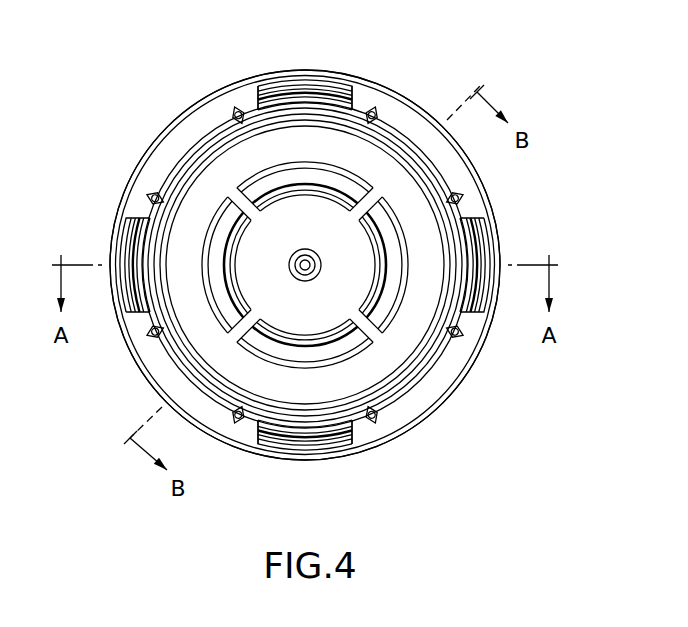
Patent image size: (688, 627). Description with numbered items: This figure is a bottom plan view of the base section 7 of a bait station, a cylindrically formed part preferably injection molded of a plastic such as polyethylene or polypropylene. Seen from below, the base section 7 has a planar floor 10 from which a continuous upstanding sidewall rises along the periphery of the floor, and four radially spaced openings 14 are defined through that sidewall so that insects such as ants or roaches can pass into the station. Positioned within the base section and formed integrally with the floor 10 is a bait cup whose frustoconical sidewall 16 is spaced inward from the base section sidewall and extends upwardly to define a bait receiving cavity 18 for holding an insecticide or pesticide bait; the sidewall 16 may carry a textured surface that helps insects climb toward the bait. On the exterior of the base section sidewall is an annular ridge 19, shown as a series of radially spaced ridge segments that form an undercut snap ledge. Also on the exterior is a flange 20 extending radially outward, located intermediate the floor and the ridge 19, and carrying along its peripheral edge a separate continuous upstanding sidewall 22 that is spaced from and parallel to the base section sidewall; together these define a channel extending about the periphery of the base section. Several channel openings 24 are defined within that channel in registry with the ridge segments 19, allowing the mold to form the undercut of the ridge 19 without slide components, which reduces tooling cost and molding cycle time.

The base section 7 is at (430, 90).
The planar floor 10 is at (271, 157).
The radially spaced openings 14 is at (352, 104).
The frustoconical sidewall 16 is at (335, 182).
The bait receiving cavity 18 is at (298, 236).
The annular ridge 19 is at (264, 86).
The flange 20 is at (206, 124).
The upstanding sidewall 22 is at (171, 121).
The channel openings 24 is at (297, 84).